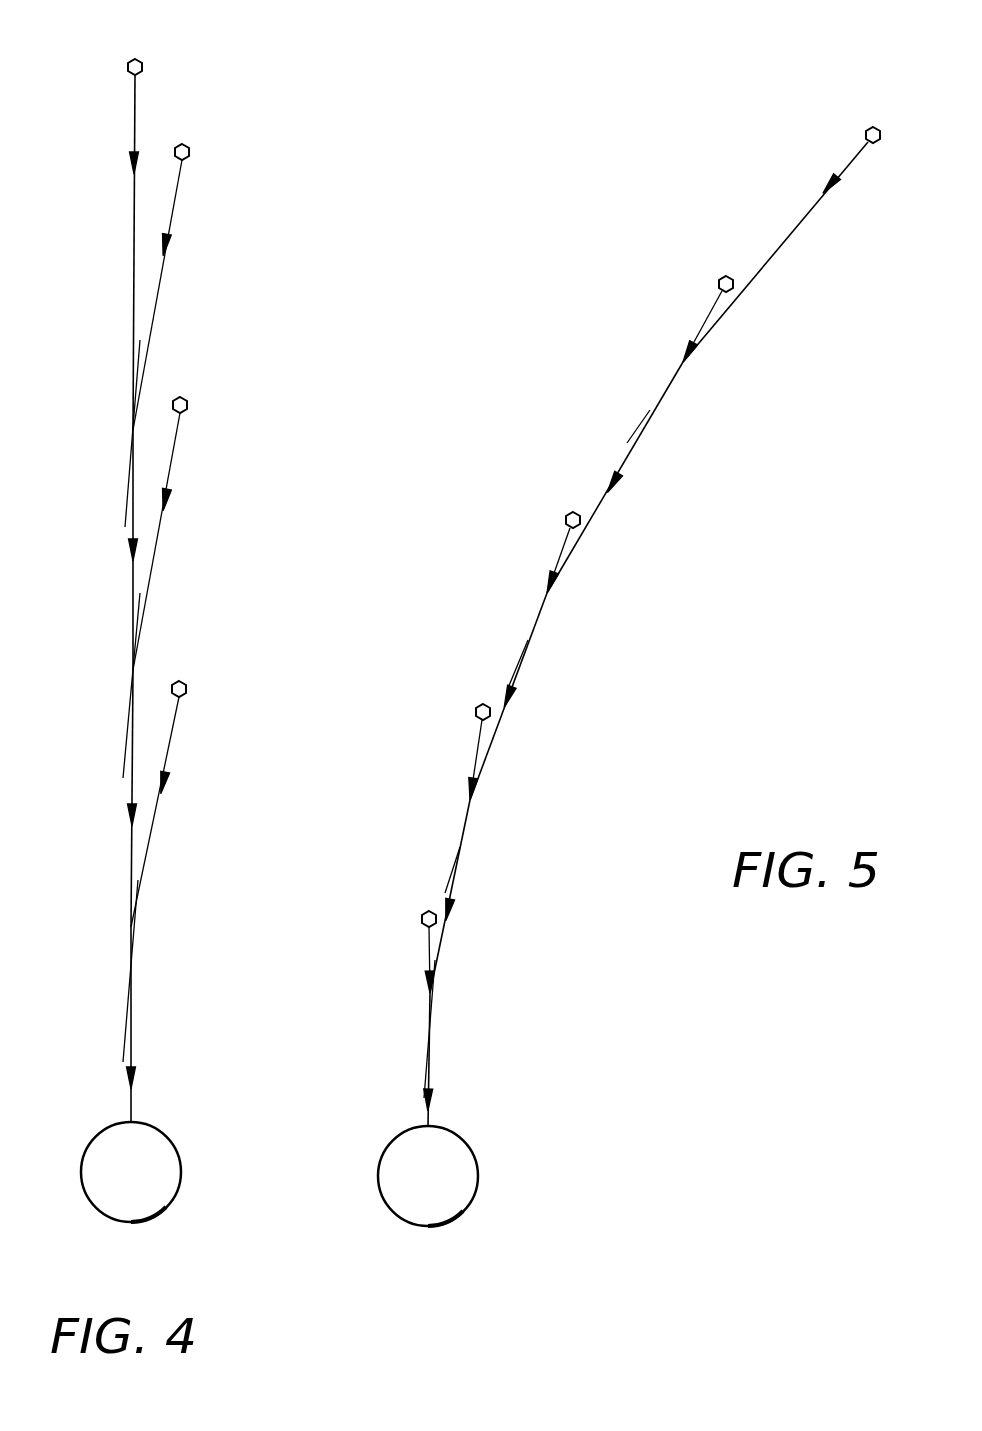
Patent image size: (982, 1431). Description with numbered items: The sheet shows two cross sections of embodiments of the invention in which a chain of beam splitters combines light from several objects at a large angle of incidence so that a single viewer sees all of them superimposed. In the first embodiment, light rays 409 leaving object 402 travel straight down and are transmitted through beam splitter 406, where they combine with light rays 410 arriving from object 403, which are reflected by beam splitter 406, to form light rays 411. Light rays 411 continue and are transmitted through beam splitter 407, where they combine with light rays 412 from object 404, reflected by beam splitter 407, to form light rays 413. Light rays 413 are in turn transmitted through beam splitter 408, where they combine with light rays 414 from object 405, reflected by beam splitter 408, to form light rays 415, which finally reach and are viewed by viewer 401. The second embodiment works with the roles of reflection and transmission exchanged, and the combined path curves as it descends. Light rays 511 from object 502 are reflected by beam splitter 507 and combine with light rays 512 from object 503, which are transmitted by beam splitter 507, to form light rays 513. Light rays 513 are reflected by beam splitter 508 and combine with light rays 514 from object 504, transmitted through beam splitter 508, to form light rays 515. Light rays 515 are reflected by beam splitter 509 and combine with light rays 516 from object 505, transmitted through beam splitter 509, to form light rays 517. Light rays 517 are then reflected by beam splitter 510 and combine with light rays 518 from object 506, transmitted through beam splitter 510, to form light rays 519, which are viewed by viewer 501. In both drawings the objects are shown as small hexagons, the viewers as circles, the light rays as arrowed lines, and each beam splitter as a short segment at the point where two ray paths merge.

In FIG. 4, the viewer 401 is at (93, 1140).
In FIG. 4, the object 402 is at (135, 58).
In FIG. 4, the object 403 is at (190, 150).
In FIG. 4, the object 404 is at (188, 404).
In FIG. 4, the object 405 is at (187, 690).
In FIG. 4, the beam splitter 406 is at (125, 517).
In FIG. 4, the beam splitter 407 is at (125, 757).
In FIG. 4, the beam splitter 408 is at (124, 1045).
In FIG. 4, the light rays 409 is at (133, 245).
In FIG. 4, the light rays 410 is at (158, 290).
In FIG. 4, the light rays 411 is at (133, 583).
In FIG. 4, the light rays 412 is at (157, 557).
In FIG. 4, the light rays 413 is at (131, 855).
In FIG. 4, the light rays 414 is at (150, 905).
In FIG. 4, the light rays 415 is at (131, 1043).
In FIG. 5, the viewer 501 is at (470, 1143).
In FIG. 5, the object 502 is at (868, 127).
In FIG. 5, the object 503 is at (722, 277).
In FIG. 5, the object 504 is at (567, 512).
In FIG. 5, the object 505 is at (478, 705).
In FIG. 5, the object 506 is at (424, 910).
In FIG. 5, the beam splitter 507 is at (637, 430).
In FIG. 5, the beam splitter 508 is at (523, 658).
In FIG. 5, the beam splitter 509 is at (450, 868).
In FIG. 5, the beam splitter 510 is at (425, 1078).
In FIG. 5, the light rays 511 is at (795, 234).
In FIG. 5, the light rays 512 is at (712, 318).
In FIG. 5, the light rays 513 is at (590, 535).
In FIG. 5, the light rays 514 is at (560, 550).
In FIG. 5, the light rays 515 is at (520, 668).
In FIG. 5, the light rays 516 is at (478, 748).
In FIG. 5, the light rays 517 is at (458, 890).
In FIG. 5, the light rays 518 is at (426, 945).
In FIG. 5, the light rays 519 is at (430, 1090).